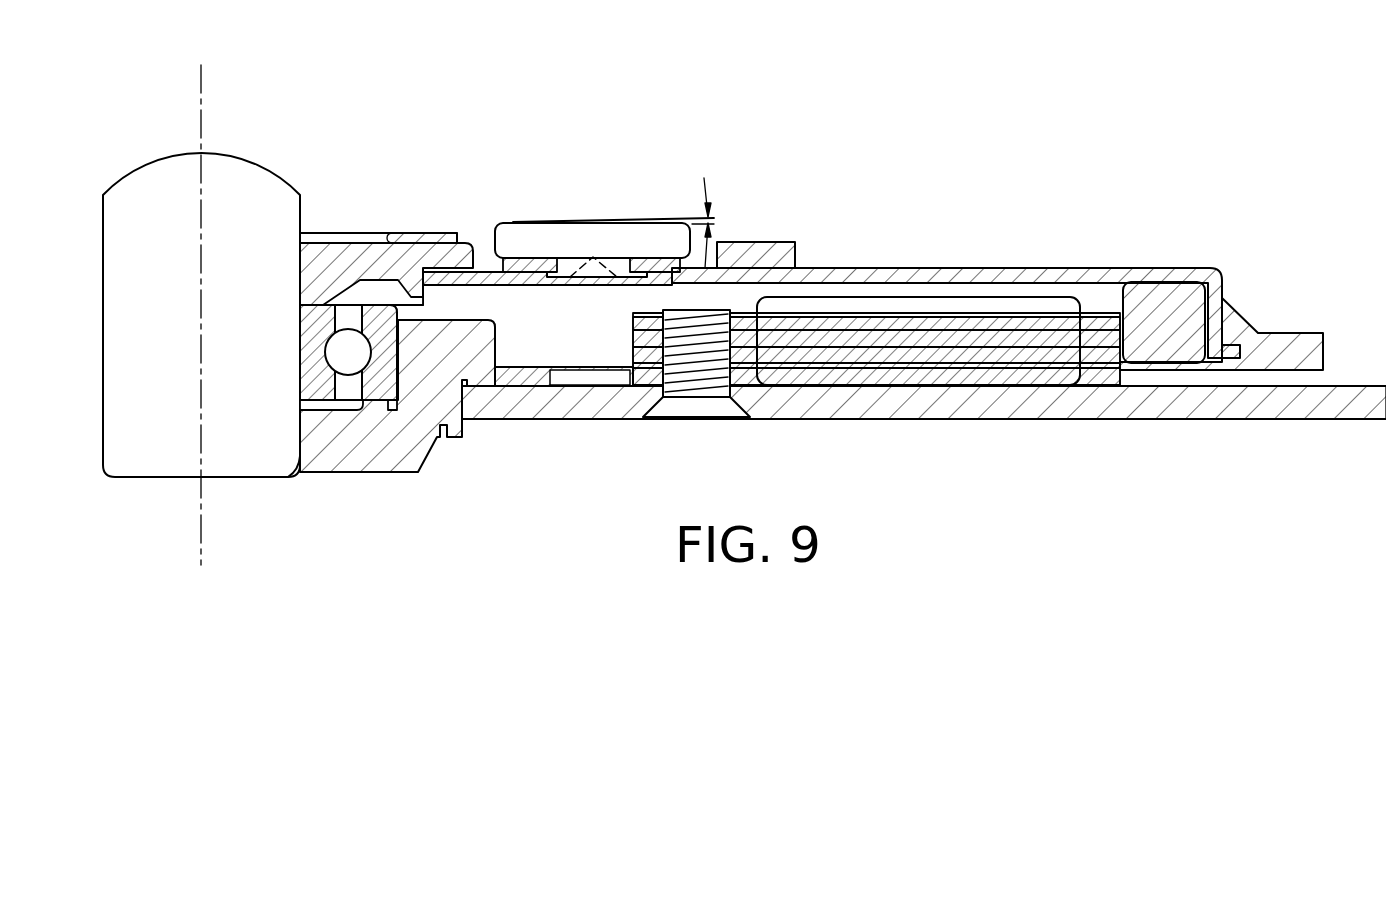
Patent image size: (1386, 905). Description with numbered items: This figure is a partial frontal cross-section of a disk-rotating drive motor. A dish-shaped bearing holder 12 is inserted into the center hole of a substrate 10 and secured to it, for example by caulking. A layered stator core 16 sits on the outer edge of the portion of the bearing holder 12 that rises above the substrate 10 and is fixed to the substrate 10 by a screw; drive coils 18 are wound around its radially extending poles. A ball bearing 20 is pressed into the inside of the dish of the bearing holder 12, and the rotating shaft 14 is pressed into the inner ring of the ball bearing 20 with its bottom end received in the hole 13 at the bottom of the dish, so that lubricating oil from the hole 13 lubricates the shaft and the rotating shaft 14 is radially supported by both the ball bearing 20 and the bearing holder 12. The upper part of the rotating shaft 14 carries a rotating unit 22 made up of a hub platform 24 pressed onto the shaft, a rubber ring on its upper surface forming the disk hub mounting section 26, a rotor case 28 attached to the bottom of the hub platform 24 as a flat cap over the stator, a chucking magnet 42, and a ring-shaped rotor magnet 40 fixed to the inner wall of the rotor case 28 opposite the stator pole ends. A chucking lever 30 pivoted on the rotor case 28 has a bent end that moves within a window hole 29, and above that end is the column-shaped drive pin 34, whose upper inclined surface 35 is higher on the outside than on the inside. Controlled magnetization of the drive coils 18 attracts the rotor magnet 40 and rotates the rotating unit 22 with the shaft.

The substrate 10 is at (1188, 403).
The bearing holder 12 is at (383, 457).
The hole 13 is at (298, 458).
The rotating shaft 14 is at (173, 470).
The layered stator core 16 is at (875, 360).
The drive coils 18 is at (1005, 378).
The ball bearing 20 is at (347, 300).
The rotating unit 22 is at (752, 186).
The hub platform 24 is at (430, 253).
The disk hub mounting section 26 is at (398, 234).
The rotor case 28 is at (1028, 272).
The window hole 29 is at (527, 280).
The chucking lever 30 is at (532, 258).
The drive pin 34 is at (573, 228).
The inclined surface 35 is at (627, 220).
The rotor magnet 40 is at (1168, 292).
The chucking magnet 42 is at (770, 250).